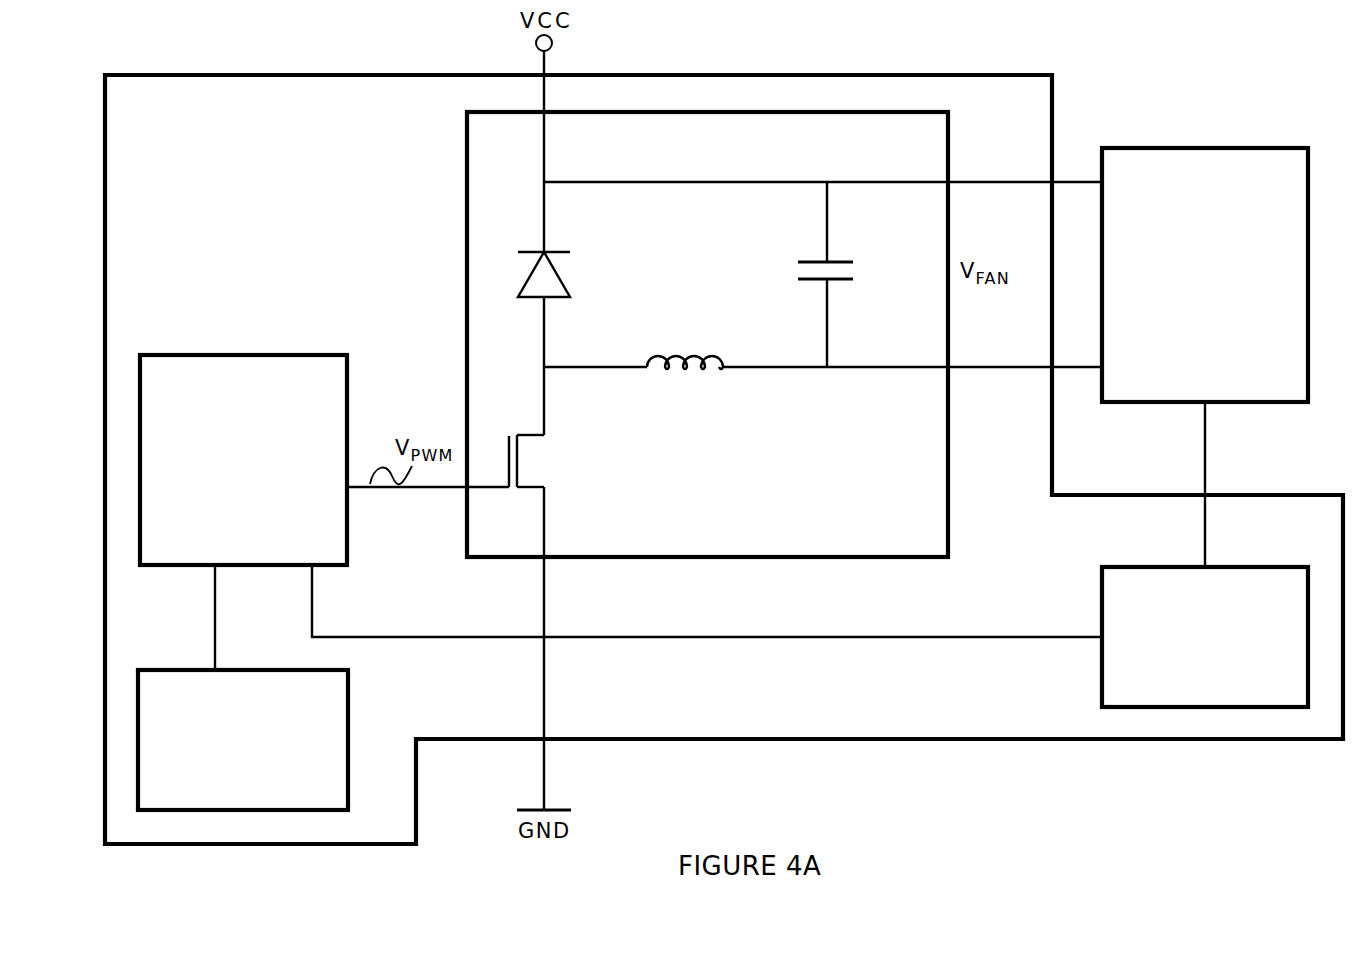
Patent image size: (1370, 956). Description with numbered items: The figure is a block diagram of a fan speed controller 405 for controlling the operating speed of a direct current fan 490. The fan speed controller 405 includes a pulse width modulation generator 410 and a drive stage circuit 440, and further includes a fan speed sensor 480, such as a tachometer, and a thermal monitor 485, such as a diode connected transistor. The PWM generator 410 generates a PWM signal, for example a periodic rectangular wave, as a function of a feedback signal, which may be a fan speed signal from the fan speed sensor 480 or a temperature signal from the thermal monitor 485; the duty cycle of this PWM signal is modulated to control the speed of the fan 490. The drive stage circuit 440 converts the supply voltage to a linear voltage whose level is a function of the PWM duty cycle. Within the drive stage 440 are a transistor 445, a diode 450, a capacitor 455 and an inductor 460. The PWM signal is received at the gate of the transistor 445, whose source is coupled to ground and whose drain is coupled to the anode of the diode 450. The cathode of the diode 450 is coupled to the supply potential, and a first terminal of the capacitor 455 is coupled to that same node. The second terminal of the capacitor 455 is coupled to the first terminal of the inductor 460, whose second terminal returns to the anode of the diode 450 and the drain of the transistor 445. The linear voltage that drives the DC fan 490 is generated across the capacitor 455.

The fan speed controller 405 is at (311, 109).
The pulse width modulation (PWM) generator 410 is at (336, 389).
The drive stage circuit 440 is at (926, 476).
The transistor 445 is at (533, 482).
The diode 450 is at (572, 277).
The capacitor 455 is at (840, 260).
The inductor 460 is at (705, 345).
The fan speed sensor 480 is at (1297, 599).
The thermal monitor 485 is at (334, 703).
The DC fan 490 is at (1297, 179).